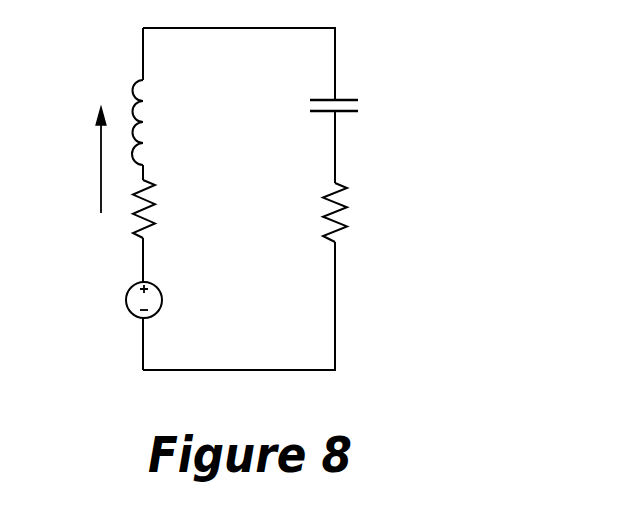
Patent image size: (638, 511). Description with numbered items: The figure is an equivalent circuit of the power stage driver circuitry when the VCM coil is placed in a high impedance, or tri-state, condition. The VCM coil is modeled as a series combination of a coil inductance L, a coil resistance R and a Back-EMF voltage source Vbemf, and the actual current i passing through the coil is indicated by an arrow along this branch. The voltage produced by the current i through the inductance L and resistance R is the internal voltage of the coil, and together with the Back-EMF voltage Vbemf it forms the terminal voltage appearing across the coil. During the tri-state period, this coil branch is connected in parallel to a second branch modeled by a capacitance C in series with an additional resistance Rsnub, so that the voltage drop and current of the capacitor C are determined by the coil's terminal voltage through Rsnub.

The coil inductance L is at (157, 122).
The coil resistance R is at (162, 209).
The Back-EMF voltage Vbemf is at (106, 300).
The capacitance C is at (345, 110).
The additional resistance Rsnub is at (373, 212).
The actual current i is at (94, 160).